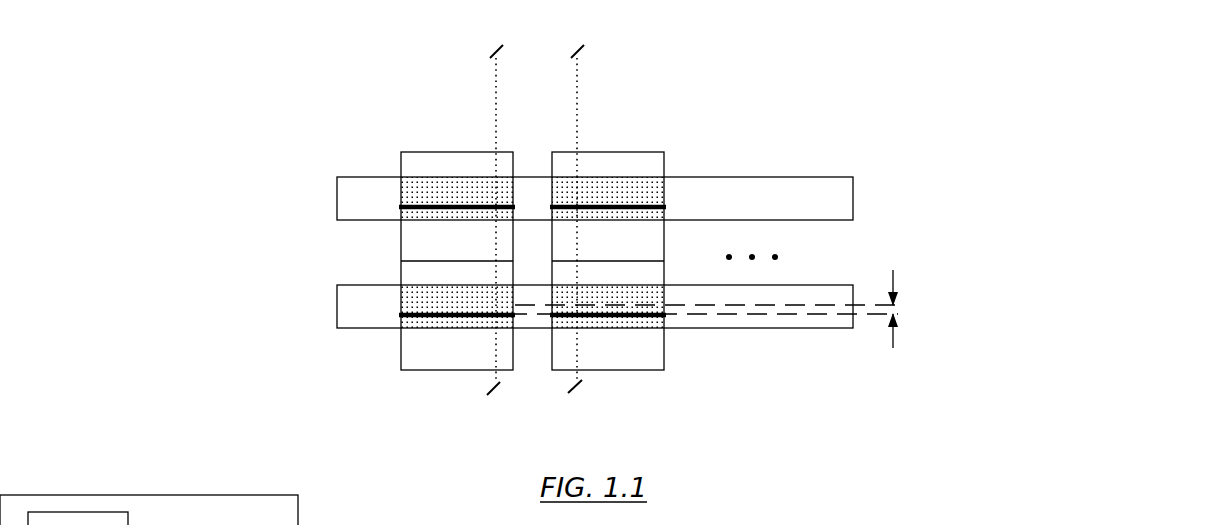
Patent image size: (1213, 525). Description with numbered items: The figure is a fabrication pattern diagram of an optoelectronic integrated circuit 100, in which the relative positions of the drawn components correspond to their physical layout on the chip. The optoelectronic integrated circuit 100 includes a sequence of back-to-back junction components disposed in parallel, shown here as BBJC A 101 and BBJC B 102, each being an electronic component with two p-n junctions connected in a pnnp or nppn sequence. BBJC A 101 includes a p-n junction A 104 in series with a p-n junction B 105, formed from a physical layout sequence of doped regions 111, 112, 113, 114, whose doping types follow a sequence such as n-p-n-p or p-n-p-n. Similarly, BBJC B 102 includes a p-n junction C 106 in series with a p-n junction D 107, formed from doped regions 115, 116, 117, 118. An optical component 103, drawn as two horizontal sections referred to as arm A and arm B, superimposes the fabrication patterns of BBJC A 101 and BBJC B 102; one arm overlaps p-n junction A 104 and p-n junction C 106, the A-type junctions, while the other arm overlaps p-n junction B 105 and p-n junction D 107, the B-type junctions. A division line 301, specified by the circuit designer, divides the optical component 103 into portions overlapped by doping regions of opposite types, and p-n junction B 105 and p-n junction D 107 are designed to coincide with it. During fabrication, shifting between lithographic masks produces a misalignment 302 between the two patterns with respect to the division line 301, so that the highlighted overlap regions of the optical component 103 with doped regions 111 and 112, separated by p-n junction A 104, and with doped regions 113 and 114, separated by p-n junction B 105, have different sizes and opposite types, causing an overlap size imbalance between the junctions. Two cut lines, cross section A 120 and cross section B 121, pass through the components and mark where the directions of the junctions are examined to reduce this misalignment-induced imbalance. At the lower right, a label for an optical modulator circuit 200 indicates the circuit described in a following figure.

The optoelectronic integrated circuit 100 is at (597, 248).
The BBJC A 101 is at (336, 228).
The BBJC B 102 is at (731, 244).
The optical component 103 is at (353, 197).
The p-n junction A 104 is at (435, 203).
The p-n junction B 105 is at (430, 322).
The p-n junction C 106 is at (633, 202).
The p-n junction D 107 is at (632, 317).
The doped region 111 is at (475, 189).
The doped region 112 is at (475, 244).
The doped region 113 is at (475, 301).
The doped region 114 is at (475, 354).
The doped region 115 is at (627, 189).
The doped region 116 is at (627, 244).
The doped region 117 is at (627, 301).
The doped region 118 is at (627, 354).
The cross section A 120 is at (498, 395).
The cross section B 121 is at (577, 388).
The Optical Modulator Circuit 200 is at (581, 499).
The division line 301 is at (817, 302).
The misalignment 302 is at (907, 312).